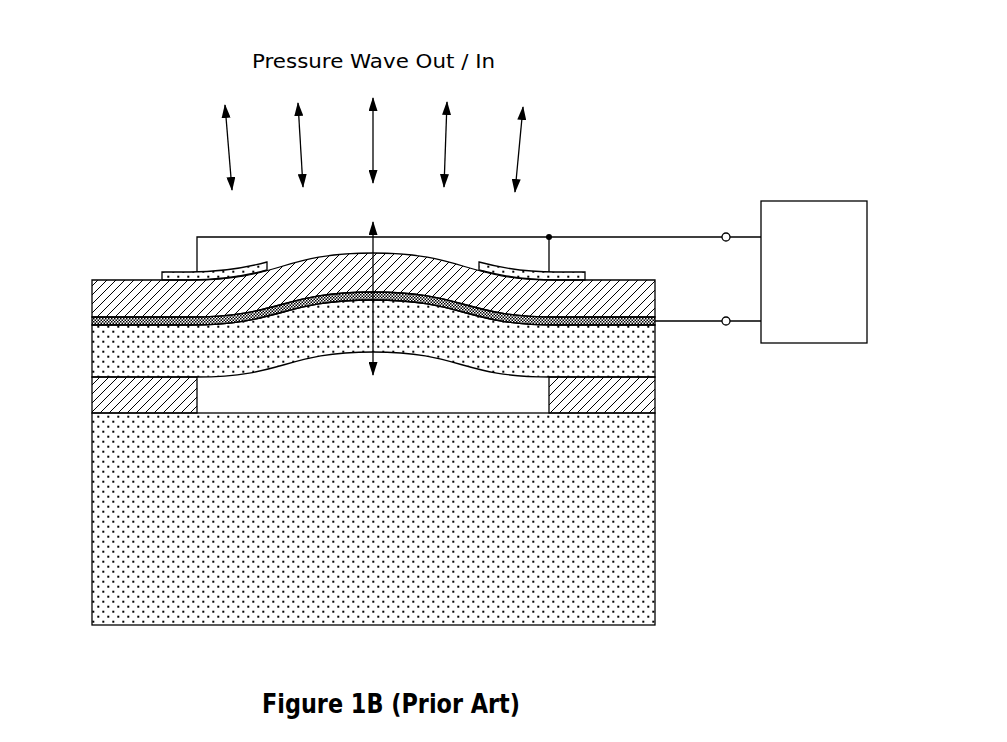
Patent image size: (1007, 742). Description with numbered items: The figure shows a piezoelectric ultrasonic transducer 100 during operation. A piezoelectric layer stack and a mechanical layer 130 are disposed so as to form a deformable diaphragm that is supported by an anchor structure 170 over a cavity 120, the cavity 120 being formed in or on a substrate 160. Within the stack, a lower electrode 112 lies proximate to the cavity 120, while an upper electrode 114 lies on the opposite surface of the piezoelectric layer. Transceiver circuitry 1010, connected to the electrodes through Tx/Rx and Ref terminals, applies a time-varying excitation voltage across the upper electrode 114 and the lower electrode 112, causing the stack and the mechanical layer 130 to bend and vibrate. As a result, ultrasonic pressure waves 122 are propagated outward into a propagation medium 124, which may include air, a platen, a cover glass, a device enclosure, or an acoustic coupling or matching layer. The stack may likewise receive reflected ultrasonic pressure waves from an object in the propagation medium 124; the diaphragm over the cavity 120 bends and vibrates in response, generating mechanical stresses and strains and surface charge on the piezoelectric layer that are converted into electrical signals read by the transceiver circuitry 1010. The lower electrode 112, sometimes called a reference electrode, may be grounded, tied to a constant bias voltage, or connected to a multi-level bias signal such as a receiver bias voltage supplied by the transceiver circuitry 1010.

The piezoelectric ultrasonic transducer 100 is at (143, 75).
The lower electrode 112 is at (595, 310).
The upper electrode 114 is at (523, 268).
The cavity 120 is at (398, 401).
The ultrasonic pressure waves 122 is at (522, 130).
The propagation medium 124 is at (680, 72).
The mechanical layer 130 is at (655, 360).
The substrate 160 is at (655, 492).
The anchor structure 170 is at (655, 403).
The transceiver circuitry 1010 is at (797, 201).